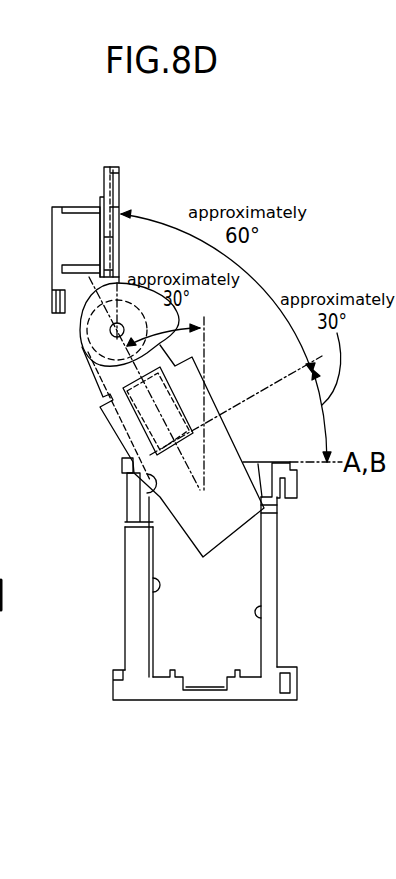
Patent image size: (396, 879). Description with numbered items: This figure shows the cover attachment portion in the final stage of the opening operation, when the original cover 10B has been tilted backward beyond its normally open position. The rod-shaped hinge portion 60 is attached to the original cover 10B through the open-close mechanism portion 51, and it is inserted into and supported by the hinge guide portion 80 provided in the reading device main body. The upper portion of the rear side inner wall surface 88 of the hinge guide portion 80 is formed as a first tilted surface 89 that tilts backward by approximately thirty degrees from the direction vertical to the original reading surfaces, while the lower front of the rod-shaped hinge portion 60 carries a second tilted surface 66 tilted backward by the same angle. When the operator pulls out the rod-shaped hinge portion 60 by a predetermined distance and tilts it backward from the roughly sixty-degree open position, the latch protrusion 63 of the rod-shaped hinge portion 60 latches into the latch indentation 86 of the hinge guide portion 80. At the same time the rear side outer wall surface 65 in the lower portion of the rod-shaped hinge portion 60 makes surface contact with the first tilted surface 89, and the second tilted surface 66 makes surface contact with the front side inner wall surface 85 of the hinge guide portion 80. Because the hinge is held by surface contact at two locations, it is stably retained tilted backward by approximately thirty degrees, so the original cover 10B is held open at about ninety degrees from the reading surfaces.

The original cover 10B is at (72, 207).
The open-close mechanism portion 51 is at (80, 330).
The rod-shaped hinge portion 60 is at (100, 410).
The latch protrusion 63 is at (258, 462).
The rear side outer wall surface 65 is at (122, 447).
The second tilted surface 66 is at (276, 562).
The hinge guide portion 80 is at (128, 642).
The front side inner wall surface 85 is at (258, 612).
The latch indentation 86 is at (278, 513).
The rear side inner wall surface 88 is at (153, 583).
The first tilted surface 89 is at (147, 497).